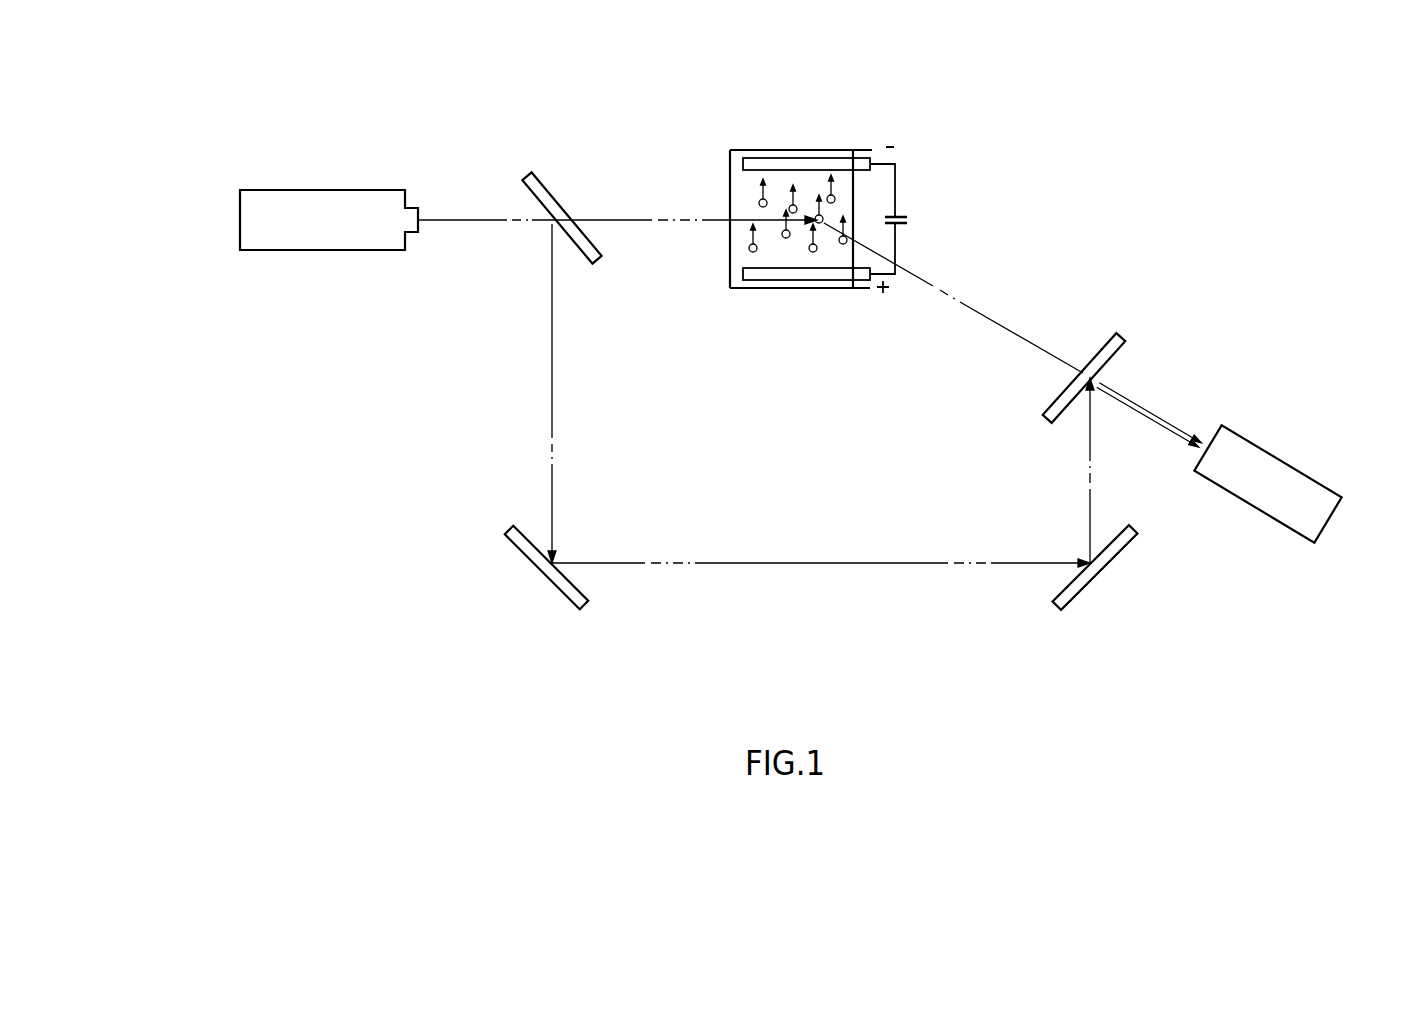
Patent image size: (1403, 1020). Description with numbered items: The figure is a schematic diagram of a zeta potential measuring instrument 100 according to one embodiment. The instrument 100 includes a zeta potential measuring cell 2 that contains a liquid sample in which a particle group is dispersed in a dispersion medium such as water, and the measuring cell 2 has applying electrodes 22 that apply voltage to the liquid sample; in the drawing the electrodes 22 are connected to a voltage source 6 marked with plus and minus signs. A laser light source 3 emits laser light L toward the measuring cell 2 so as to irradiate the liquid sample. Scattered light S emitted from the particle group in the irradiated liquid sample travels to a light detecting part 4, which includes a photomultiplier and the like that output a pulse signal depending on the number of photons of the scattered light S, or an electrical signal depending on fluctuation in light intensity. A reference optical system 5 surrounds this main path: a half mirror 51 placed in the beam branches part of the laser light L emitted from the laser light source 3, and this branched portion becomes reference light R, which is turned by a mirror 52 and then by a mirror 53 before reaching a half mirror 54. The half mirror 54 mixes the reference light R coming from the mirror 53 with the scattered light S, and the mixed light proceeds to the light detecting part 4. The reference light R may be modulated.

The zeta potential measuring instrument 100 is at (472, 100).
The laser light source 3 is at (322, 190).
The half mirror 51 is at (546, 178).
The zeta potential measuring cell 2 is at (803, 150).
The applying electrodes 22 is at (743, 274).
The power supply 6 is at (897, 200).
The half mirror 54 is at (1082, 347).
The light detecting part 4 is at (1285, 455).
The reference optical system 5 is at (506, 447).
The mirror 52 is at (525, 558).
The mirror 53 is at (1120, 552).
The laser light L is at (478, 224).
The scattered light S is at (965, 307).
The reference light R is at (1087, 458).